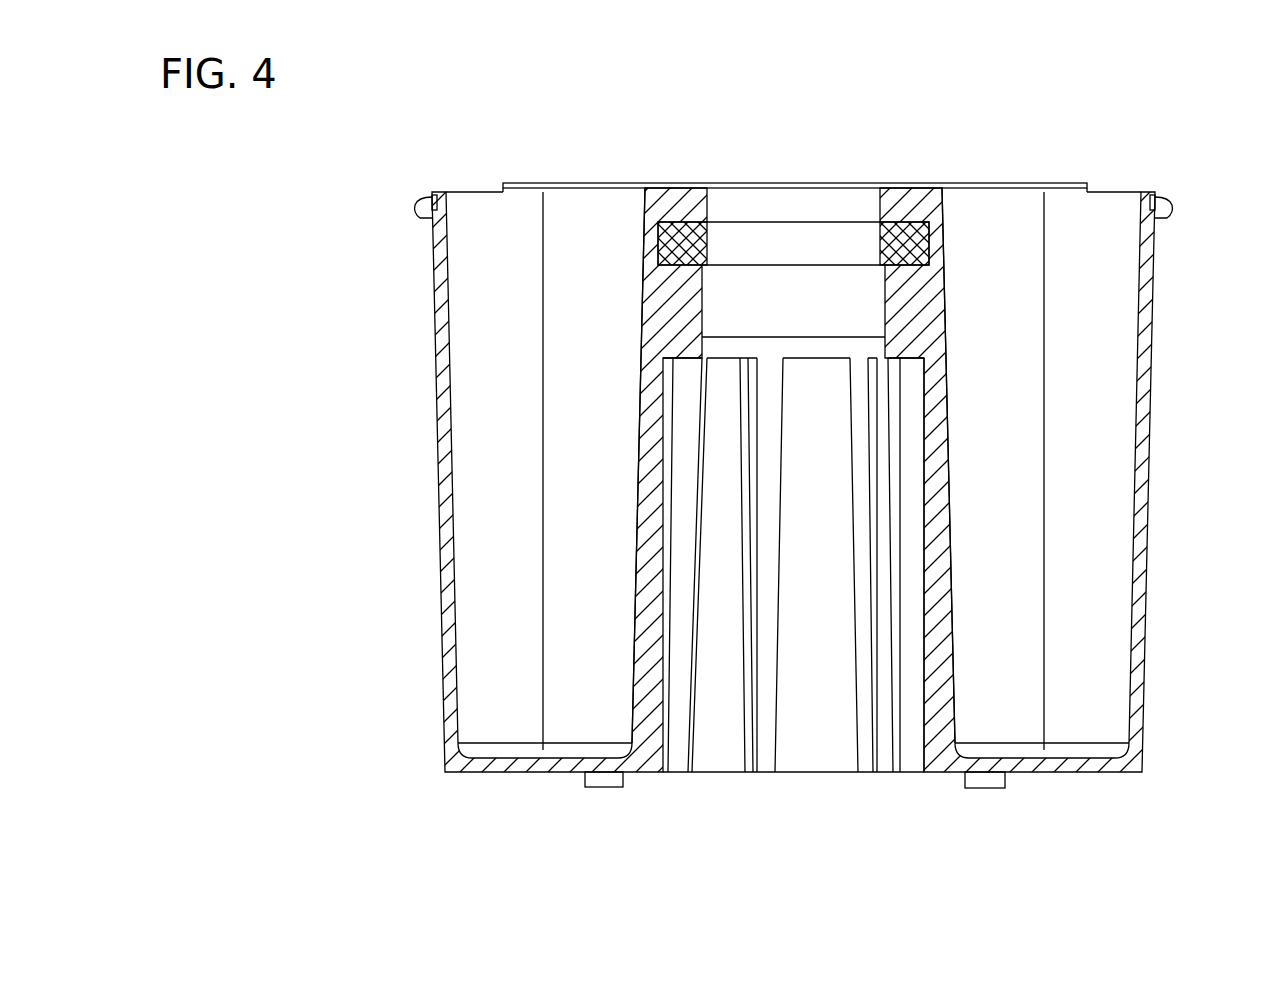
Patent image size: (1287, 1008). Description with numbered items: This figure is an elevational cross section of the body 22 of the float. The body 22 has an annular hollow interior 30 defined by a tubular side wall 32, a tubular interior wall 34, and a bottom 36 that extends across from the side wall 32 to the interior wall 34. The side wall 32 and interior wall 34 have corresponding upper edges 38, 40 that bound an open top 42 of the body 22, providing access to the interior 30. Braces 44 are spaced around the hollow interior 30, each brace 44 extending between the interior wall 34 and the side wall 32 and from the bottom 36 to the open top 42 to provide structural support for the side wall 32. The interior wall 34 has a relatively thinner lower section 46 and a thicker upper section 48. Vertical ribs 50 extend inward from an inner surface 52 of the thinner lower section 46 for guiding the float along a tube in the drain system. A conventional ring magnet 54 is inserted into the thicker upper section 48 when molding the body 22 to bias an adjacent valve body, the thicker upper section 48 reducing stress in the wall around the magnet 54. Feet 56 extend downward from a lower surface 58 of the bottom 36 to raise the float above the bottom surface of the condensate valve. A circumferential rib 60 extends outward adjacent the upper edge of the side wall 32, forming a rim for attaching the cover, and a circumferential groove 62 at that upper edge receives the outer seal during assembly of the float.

The body 22 is at (1168, 272).
The annular hollow interior 30 is at (1097, 440).
The tubular side wall 32 is at (1147, 618).
The tubular interior wall 34 is at (957, 555).
The bottom 36 is at (1093, 752).
The upper edge of the side wall 38 is at (942, 186).
The upper edge of the interior wall 40 is at (1152, 190).
The open top 42 is at (450, 192).
The braces 44 is at (607, 743).
The thinner lower section 46 is at (607, 551).
The thicker upper section 48 is at (607, 266).
The vertical ribs 50 is at (775, 757).
The inner surface 52 is at (928, 752).
The ring magnet 54 is at (707, 243).
The feet 56 is at (583, 783).
The lower surface of the bottom 58 is at (1058, 773).
The circumferential rib 60 is at (418, 210).
The circumferential groove 62 is at (437, 196).